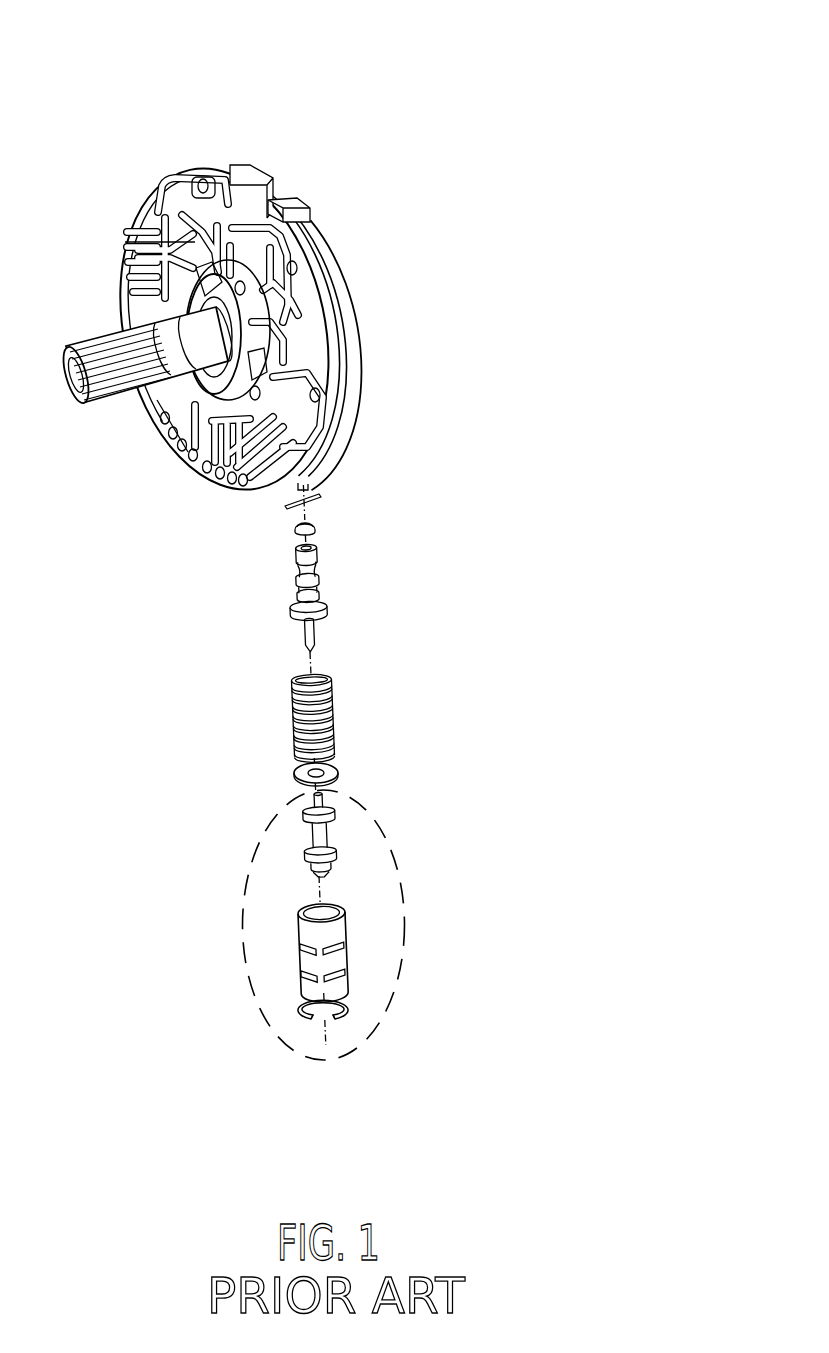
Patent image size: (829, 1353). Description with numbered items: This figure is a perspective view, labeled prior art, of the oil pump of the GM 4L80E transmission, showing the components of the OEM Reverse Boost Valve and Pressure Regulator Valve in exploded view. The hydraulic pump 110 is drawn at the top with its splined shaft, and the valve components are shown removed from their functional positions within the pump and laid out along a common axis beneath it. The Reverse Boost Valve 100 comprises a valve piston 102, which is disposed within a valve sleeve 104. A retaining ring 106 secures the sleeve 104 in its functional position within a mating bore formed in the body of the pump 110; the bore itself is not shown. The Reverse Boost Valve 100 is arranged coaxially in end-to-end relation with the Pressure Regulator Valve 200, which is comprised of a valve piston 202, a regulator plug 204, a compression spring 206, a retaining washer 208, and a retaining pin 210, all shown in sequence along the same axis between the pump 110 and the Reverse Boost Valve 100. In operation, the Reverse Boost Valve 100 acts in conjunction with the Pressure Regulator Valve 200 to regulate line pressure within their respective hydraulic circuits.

The Reverse Boost Valve 100 is at (224, 903).
The valve piston 102 is at (327, 836).
The valve sleeve 104 is at (344, 950).
The retaining ring 106 is at (348, 1007).
The hydraulic pump 110 is at (260, 118).
The Pressure Regulator Valve 200 is at (258, 607).
The valve piston 202 is at (322, 580).
The regulator plug 204 is at (314, 528).
The compression spring 206 is at (334, 712).
The retaining washer 208 is at (338, 771).
The retaining pin 210 is at (320, 498).